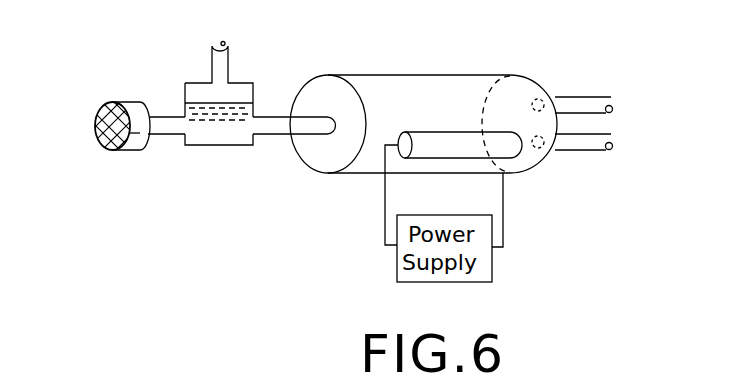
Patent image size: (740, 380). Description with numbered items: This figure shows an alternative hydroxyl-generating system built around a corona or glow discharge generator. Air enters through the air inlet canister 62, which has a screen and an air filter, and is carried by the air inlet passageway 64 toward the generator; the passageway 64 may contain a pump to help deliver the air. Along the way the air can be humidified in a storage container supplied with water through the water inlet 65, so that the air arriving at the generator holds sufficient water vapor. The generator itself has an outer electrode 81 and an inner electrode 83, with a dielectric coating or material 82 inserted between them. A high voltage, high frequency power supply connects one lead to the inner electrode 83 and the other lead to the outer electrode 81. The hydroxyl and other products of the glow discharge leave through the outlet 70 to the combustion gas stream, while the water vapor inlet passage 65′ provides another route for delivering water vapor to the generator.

The air inlet canister 62 is at (104, 111).
The air inlet passageway 64 is at (163, 111).
The water inlet 65 is at (211, 60).
The outer electrode 81 is at (502, 166).
The dielectric coating or material 82 is at (470, 93).
The inner electrode 83 is at (440, 132).
The outlet 70 is at (592, 97).
The water vapor inlet passage 65′ is at (586, 150).